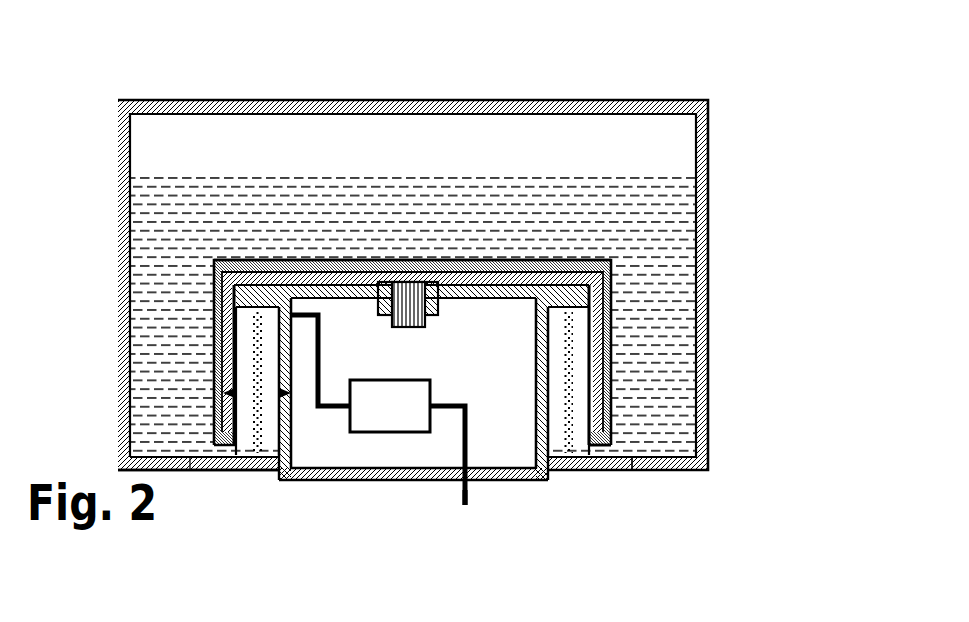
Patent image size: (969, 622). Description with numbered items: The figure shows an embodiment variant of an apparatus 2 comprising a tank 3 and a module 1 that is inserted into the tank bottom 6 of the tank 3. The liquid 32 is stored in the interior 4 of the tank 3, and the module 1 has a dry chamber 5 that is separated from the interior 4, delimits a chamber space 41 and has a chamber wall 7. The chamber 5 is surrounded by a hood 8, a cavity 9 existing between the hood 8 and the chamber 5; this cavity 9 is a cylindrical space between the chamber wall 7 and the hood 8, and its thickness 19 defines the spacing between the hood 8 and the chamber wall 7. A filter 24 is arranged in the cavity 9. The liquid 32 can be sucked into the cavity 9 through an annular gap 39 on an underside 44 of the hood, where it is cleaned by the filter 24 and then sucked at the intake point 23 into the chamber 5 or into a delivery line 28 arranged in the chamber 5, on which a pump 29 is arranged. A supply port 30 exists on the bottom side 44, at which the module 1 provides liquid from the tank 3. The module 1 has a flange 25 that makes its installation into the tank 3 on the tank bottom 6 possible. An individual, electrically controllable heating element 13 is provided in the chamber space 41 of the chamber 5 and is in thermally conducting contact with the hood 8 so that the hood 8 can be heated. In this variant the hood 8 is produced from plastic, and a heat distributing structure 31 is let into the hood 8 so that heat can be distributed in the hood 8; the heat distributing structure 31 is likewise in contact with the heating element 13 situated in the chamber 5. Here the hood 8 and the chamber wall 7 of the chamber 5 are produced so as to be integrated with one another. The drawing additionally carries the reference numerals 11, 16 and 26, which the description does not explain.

The module 1 is at (647, 276).
The apparatus 2 is at (731, 103).
The tank 3 is at (602, 100).
The interior of the tank 4 is at (118, 100).
The chamber 5 is at (483, 462).
The tank bottom 6 is at (157, 472).
The chamber wall 7 is at (558, 460).
The hood 8 is at (213, 332).
The cavity 9 is at (285, 480).
The housing layer 11 is at (543, 282).
The heating element 13 is at (425, 326).
The pump housing 16 is at (470, 248).
The thickness 19 is at (316, 393).
The intake point 23 is at (282, 314).
The filter 24 is at (572, 458).
The flange 25 is at (212, 470).
The tank bottom opening 26 is at (632, 465).
The delivery line 28 is at (468, 404).
The pump 29 is at (240, 448).
The supply port 30 is at (465, 505).
The heat distributing structure 31 is at (608, 258).
The liquid 32 is at (203, 185).
The annular gap 39 is at (604, 452).
The chamber space 41 is at (513, 456).
The underside 44 is at (428, 494).